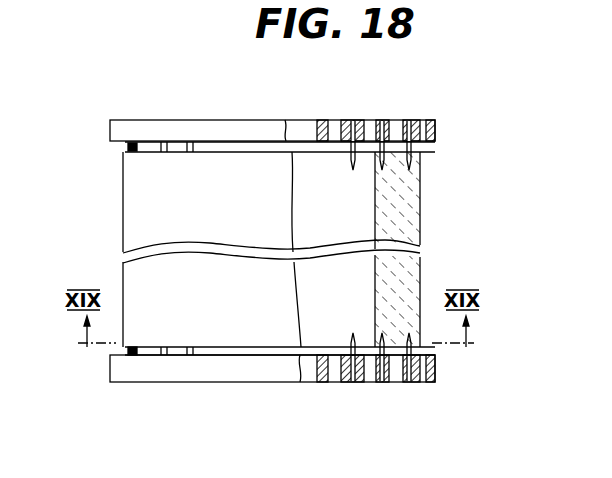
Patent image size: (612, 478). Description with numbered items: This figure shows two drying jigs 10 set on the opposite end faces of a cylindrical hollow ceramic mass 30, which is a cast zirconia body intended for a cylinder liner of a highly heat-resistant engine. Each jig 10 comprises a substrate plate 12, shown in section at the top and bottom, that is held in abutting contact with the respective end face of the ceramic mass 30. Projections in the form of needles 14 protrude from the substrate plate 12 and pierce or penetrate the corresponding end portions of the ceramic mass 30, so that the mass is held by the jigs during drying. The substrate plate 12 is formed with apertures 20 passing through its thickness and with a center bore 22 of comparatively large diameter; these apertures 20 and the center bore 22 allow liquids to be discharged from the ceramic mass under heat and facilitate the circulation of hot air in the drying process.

The jig 10 is at (437, 131).
The substrate plate 12 is at (404, 380).
The needles 14 is at (121, 150).
The apertures 20 is at (368, 120).
The center bore 22 is at (305, 120).
The cylindrical hollow ceramic mass 30 is at (420, 222).